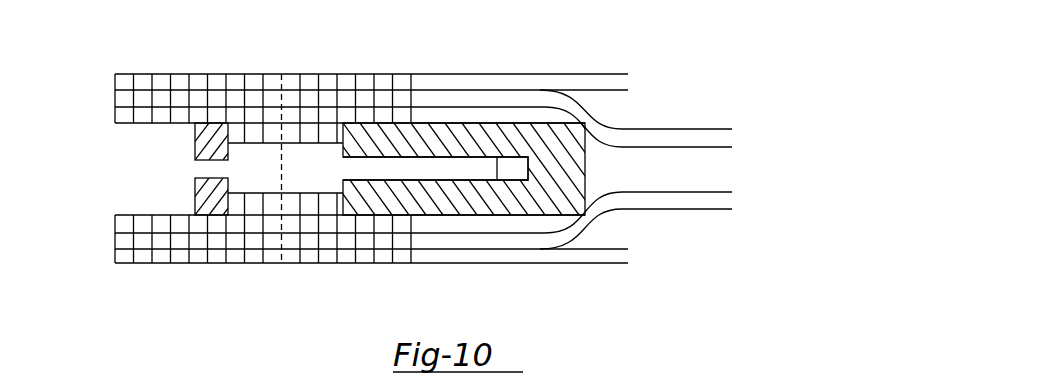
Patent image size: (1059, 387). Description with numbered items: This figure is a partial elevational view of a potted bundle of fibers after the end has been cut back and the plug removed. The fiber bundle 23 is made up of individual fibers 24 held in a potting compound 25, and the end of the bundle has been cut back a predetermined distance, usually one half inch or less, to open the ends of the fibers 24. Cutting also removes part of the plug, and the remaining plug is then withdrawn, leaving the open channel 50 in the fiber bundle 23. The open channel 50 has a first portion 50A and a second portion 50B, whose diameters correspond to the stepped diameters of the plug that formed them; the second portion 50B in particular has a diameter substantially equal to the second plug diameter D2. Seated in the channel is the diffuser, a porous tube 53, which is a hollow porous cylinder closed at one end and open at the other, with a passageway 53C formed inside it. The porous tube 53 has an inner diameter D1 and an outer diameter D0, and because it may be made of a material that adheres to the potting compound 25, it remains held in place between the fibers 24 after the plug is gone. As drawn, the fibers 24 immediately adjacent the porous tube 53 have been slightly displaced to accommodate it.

The fiber bundle 23 is at (468, 66).
The fibers 24 is at (513, 243).
The potting compound 25 is at (158, 74).
The open channel 50 is at (116, 157).
The first portion of open channel 50A is at (145, 215).
The second portion of open channel 50B is at (259, 194).
The porous tube 53 is at (366, 123).
The passageway 53C is at (415, 173).
The inner diameter of porous tube D1 is at (163, 123).
The second diameter of plug D2 is at (293, 53).
The outer diameter of porous tube D0 is at (424, 53).